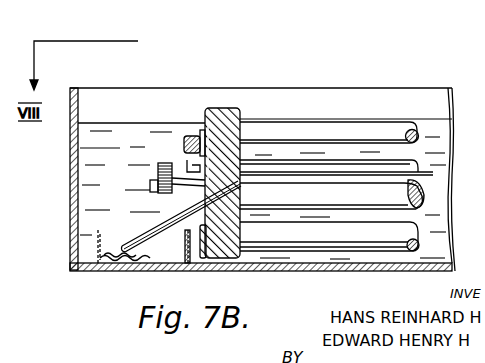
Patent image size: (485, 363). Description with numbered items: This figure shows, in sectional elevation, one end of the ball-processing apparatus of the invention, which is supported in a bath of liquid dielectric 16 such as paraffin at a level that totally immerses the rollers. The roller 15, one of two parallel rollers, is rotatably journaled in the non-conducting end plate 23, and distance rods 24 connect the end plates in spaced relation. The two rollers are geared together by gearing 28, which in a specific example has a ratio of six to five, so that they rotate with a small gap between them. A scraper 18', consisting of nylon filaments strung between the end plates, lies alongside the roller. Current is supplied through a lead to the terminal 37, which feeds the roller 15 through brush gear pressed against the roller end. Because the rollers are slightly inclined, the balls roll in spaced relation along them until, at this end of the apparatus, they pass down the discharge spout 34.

The bath of liquid dielectric 16 is at (106, 122).
The distance rods 24 is at (287, 124).
The roller 15 is at (330, 168).
The end plate 23 is at (233, 112).
The terminal 37 is at (183, 143).
The gearing 28 is at (157, 178).
The discharge spout 34 is at (240, 207).
The scraper 18' is at (332, 184).